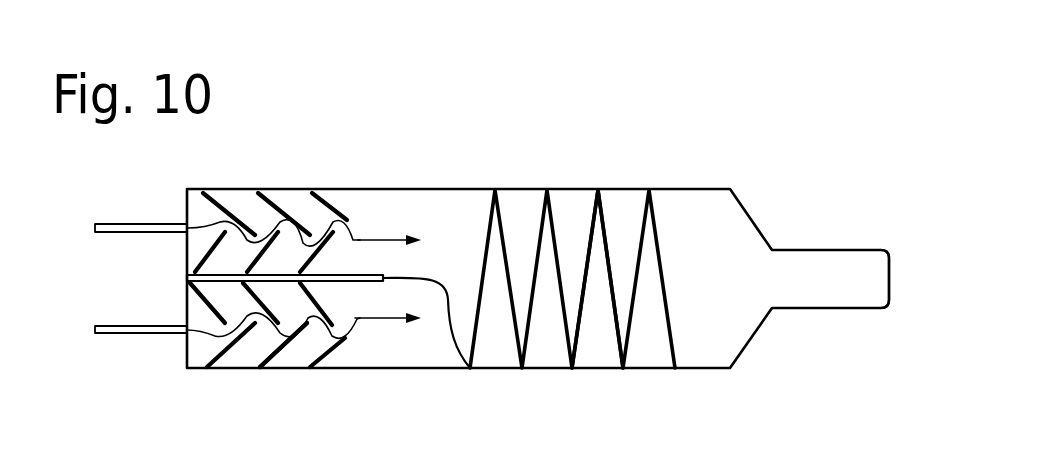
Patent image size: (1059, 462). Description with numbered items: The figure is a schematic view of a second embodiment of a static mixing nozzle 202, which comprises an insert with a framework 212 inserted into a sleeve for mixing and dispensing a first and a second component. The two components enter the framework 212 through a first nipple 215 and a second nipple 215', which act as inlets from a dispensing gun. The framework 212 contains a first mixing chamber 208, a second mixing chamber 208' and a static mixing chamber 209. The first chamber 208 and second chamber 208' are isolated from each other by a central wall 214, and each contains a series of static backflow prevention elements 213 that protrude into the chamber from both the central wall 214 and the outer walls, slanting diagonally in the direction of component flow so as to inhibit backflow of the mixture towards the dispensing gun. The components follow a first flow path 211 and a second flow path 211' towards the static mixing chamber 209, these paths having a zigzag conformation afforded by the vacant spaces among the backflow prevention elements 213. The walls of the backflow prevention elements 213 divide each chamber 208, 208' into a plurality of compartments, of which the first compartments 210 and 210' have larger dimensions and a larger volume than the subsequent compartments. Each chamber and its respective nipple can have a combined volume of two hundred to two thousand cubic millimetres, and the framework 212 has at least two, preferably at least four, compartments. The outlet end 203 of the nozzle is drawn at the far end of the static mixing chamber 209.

The static mixing nozzle 202 is at (285, 146).
The outlet 203 is at (830, 277).
The first mixing chamber 208 is at (286, 378).
The second mixing chamber 208' is at (282, 187).
The static mixing chamber 209 is at (615, 213).
The first compartment 210 is at (248, 360).
The first compartment 210' is at (213, 233).
The first flow path 211 is at (402, 371).
The second flow path 211' is at (408, 186).
The framework 212 is at (483, 180).
The static backflow prevention element 213 is at (282, 357).
The central wall 214 is at (467, 367).
The first nipple 215 is at (132, 362).
The second nipple 215' is at (127, 199).